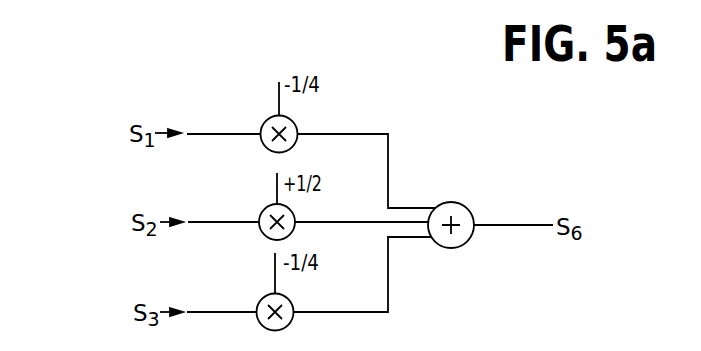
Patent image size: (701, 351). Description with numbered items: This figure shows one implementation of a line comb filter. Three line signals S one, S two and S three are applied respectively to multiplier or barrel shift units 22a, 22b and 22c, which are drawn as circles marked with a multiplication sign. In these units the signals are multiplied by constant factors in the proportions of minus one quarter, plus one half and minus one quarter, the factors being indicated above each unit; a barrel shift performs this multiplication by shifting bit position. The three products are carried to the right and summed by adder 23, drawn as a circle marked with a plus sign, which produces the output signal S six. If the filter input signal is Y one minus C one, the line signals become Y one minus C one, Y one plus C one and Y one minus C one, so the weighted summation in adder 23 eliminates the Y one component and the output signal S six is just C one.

The multiplier or barrel shift unit 22a is at (268, 117).
The multiplier or barrel shift unit 22b is at (269, 205).
The multiplier or barrel shift unit 22c is at (268, 294).
The adder 23 is at (448, 208).